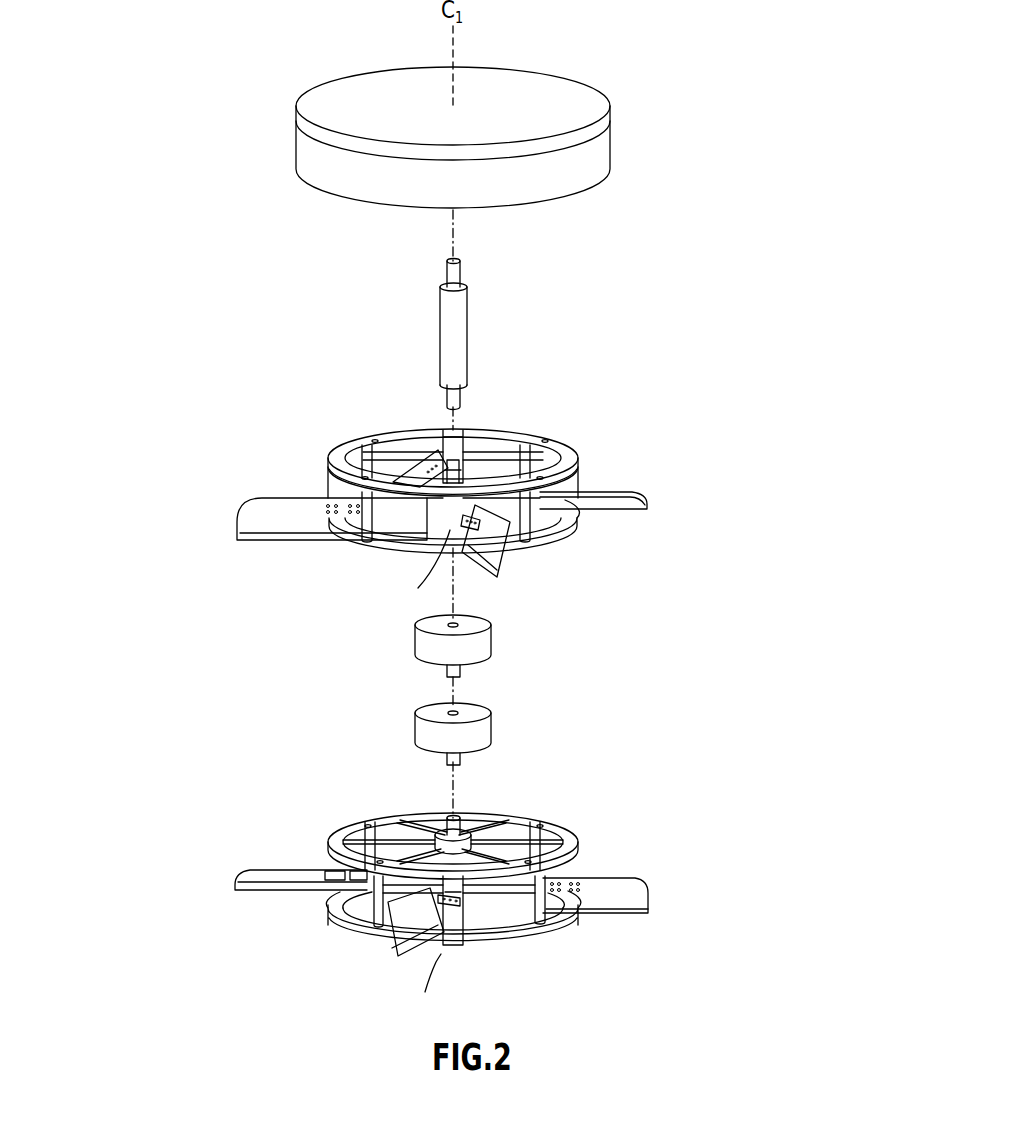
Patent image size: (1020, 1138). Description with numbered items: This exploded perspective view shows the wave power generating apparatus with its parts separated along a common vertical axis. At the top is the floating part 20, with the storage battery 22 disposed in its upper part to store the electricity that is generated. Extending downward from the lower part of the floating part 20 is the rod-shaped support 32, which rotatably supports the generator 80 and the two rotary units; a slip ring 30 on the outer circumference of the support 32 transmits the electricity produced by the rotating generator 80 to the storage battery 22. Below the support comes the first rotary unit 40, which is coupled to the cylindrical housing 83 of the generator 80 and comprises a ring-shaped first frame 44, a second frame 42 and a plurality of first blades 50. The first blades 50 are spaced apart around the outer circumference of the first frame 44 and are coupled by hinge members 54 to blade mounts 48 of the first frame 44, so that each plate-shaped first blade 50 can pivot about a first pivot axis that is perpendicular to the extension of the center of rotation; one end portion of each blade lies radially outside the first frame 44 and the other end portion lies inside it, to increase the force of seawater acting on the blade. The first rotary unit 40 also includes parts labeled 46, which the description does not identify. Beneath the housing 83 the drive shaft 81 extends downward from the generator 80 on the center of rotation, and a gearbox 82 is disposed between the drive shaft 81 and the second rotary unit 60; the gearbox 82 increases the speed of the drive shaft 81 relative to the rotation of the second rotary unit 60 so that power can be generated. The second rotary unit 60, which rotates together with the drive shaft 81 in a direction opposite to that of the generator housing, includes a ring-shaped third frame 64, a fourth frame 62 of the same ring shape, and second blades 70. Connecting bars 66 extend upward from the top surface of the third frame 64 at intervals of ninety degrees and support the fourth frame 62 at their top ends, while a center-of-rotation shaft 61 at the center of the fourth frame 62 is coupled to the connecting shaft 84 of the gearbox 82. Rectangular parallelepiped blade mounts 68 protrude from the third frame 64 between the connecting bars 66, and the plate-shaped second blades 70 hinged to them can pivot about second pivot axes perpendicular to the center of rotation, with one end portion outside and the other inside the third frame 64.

The floating part 20 is at (606, 150).
The storage battery 22 is at (612, 118).
The slip ring 30 is at (468, 341).
The support 32 is at (460, 276).
The first rotary unit 40 is at (603, 413).
The second frame 42 is at (580, 519).
The first frame 44 is at (548, 447).
The upper rotor support pillar 46 is at (530, 534).
The blade mounts 48 is at (578, 467).
The first blades 50 is at (640, 498).
The hinge members 54 is at (478, 525).
The second rotary unit 60 is at (603, 833).
The center-of-rotation shaft 61 is at (457, 824).
The fourth frame 62 is at (545, 829).
The third frame 64 is at (560, 927).
The connecting bars 66 is at (541, 922).
The blade mounts 68 is at (453, 946).
The second blades 70 is at (625, 891).
The generator 80 is at (343, 689).
The drive shaft 81 is at (447, 670).
The gearbox 82 is at (422, 726).
The housing 83 is at (422, 638).
The connecting shaft 84 is at (447, 756).